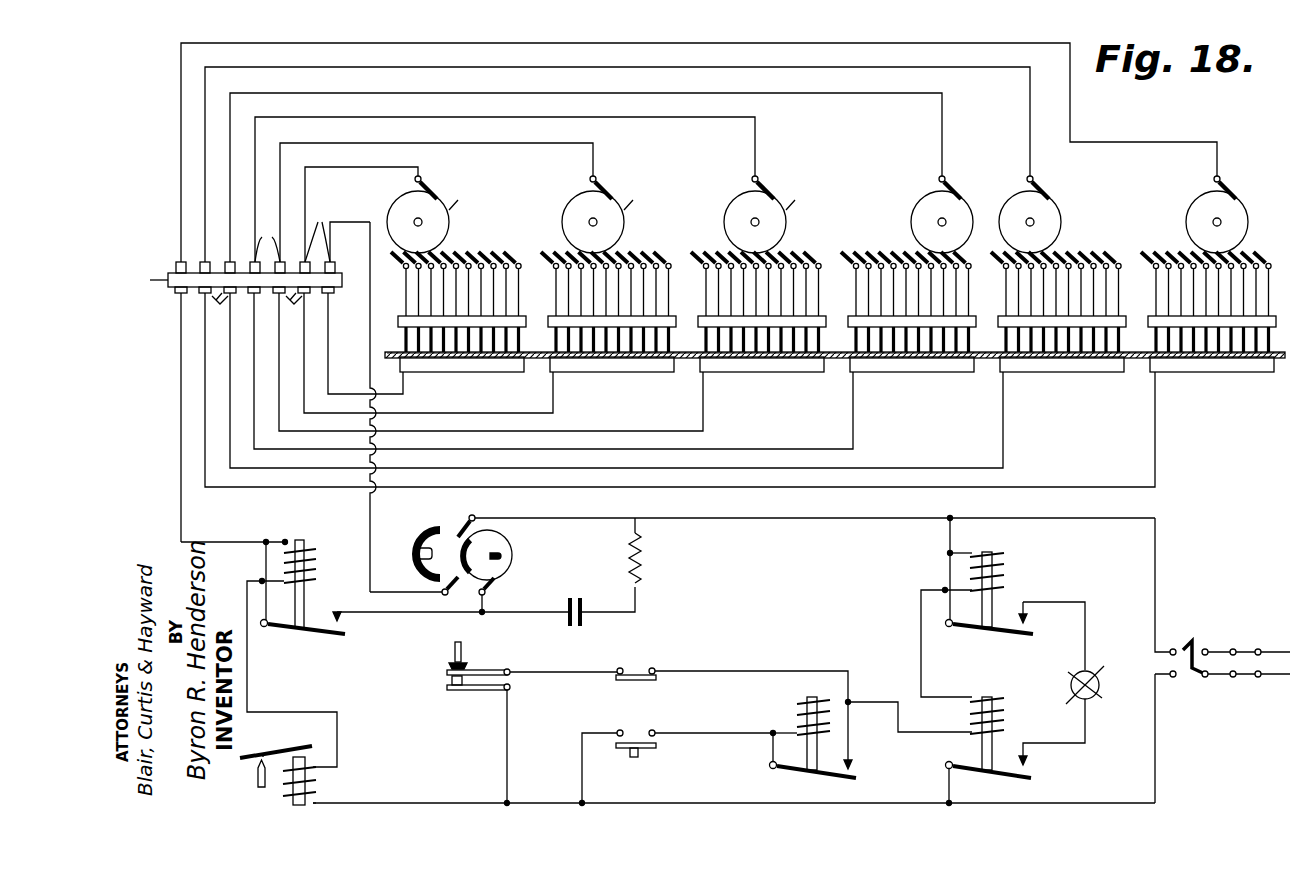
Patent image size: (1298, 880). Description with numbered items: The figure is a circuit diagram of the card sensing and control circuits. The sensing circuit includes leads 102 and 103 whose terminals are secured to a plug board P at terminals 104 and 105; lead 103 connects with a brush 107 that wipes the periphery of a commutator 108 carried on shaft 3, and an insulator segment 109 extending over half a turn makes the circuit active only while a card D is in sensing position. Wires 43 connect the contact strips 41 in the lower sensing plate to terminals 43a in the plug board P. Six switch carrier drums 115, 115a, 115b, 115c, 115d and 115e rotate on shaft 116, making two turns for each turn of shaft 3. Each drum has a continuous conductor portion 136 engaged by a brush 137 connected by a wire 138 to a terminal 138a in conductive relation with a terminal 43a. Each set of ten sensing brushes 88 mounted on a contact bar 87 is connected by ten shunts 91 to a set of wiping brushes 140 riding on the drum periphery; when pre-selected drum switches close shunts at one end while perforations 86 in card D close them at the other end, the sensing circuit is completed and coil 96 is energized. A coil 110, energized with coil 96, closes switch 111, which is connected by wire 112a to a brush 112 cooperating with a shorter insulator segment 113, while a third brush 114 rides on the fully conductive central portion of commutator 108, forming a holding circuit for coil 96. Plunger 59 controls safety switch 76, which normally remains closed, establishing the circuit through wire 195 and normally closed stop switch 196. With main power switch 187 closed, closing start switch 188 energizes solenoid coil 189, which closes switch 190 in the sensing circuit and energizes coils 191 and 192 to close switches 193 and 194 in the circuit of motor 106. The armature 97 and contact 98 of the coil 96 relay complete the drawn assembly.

The terminal 104 is at (176, 268).
The plug board P is at (148, 278).
The lead 102 is at (179, 318).
The lead 103 is at (370, 300).
The terminal 105 is at (350, 262).
The terminal 138a is at (297, 233).
The terminal 43a is at (256, 307).
The wire 138 is at (360, 168).
The drum 115 is at (404, 203).
The drum 115a is at (580, 203).
The drum 115b is at (740, 203).
The drum 115c is at (930, 203).
The drum 115d is at (1018, 203).
The drum 115e is at (1204, 203).
The shaft 116 is at (810, 222).
The brush 137 is at (1224, 190).
The conductor portion 136 is at (639, 196).
The wiping brushes 140 is at (1090, 253).
The shunts 91 is at (1020, 294).
The contact bar 87 is at (1148, 318).
The sensing brushes 88 is at (756, 357).
The perforations 86 is at (1212, 357).
The card D is at (684, 362).
The contact strip 41 is at (1232, 366).
The wire 43 is at (1155, 462).
The brush 114 is at (466, 516).
The insulator segment 109 is at (436, 548).
The commutator 108 is at (496, 562).
The insulator segment 113 is at (485, 545).
The shaft 3 is at (504, 552).
The brush 107 is at (440, 580).
The brush 112 is at (490, 588).
The wire 112a is at (398, 612).
The coil 110 is at (312, 560).
The switch 111 is at (346, 628).
The plunger 59 is at (463, 658).
The safety switch 76 is at (447, 687).
The wire 195 is at (548, 674).
The stop switch 196 is at (642, 672).
The start switch 188 is at (640, 734).
The solenoid coil 189 is at (798, 716).
The switch 190 is at (856, 766).
The coil 192 is at (998, 578).
The switch 194 is at (1030, 626).
The motor 106 is at (1090, 672).
The coil 191 is at (994, 718).
The switch 193 is at (1030, 768).
The main power switch 187 is at (1188, 680).
The coil 96 is at (312, 784).
The armature 97 is at (274, 750).
The contact 98 is at (258, 774).